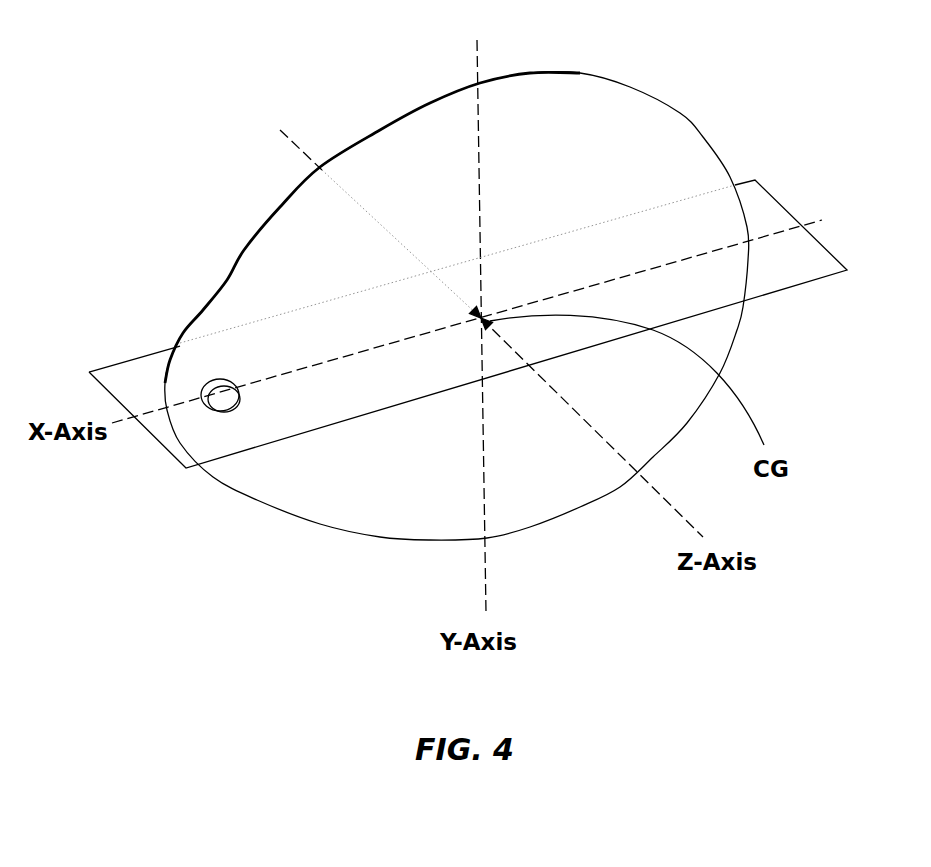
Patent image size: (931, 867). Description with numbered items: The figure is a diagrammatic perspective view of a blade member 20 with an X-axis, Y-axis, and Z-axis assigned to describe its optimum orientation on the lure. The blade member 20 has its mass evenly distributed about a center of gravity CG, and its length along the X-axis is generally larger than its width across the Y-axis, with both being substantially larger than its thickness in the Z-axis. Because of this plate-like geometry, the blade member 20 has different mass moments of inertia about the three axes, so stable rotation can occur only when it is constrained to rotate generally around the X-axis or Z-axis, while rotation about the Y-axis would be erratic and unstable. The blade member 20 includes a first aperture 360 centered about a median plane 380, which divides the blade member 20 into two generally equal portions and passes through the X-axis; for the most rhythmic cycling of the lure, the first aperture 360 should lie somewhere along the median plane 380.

The blade member 20 is at (258, 72).
The first aperture 360 is at (215, 383).
The median plane 380 is at (777, 275).